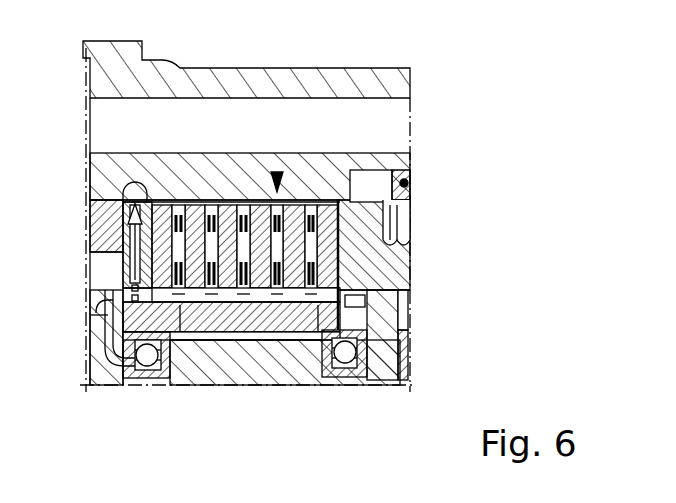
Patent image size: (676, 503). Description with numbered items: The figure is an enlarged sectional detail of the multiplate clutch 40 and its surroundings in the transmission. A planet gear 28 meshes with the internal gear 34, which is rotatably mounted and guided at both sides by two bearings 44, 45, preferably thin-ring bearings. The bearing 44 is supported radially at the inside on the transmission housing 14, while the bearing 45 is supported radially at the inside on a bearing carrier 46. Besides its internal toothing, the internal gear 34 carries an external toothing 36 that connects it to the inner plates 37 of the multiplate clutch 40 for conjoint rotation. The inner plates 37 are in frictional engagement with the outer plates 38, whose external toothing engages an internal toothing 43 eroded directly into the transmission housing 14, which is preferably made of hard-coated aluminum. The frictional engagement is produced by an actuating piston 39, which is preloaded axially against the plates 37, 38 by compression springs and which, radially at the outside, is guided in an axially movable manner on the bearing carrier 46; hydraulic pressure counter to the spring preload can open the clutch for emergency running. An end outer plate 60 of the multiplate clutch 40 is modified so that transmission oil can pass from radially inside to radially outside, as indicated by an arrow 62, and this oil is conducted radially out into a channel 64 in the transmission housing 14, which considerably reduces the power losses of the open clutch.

The transmission housing 14 is at (345, 76).
The planet gear 28 is at (248, 355).
The internal gear 34 is at (202, 333).
The external toothing 36 is at (295, 305).
The inner plates 37 is at (250, 200).
The outer plates 38 is at (225, 205).
The actuating piston 39 is at (395, 270).
The multiplate clutch 40 is at (277, 180).
The internal toothing 43 is at (177, 200).
The bearing 44 is at (130, 372).
The bearing 45 is at (352, 368).
The bearing carrier 46 is at (392, 363).
The end outer plate 60 is at (122, 265).
The arrow 62 is at (120, 232).
The channel 64 is at (124, 200).